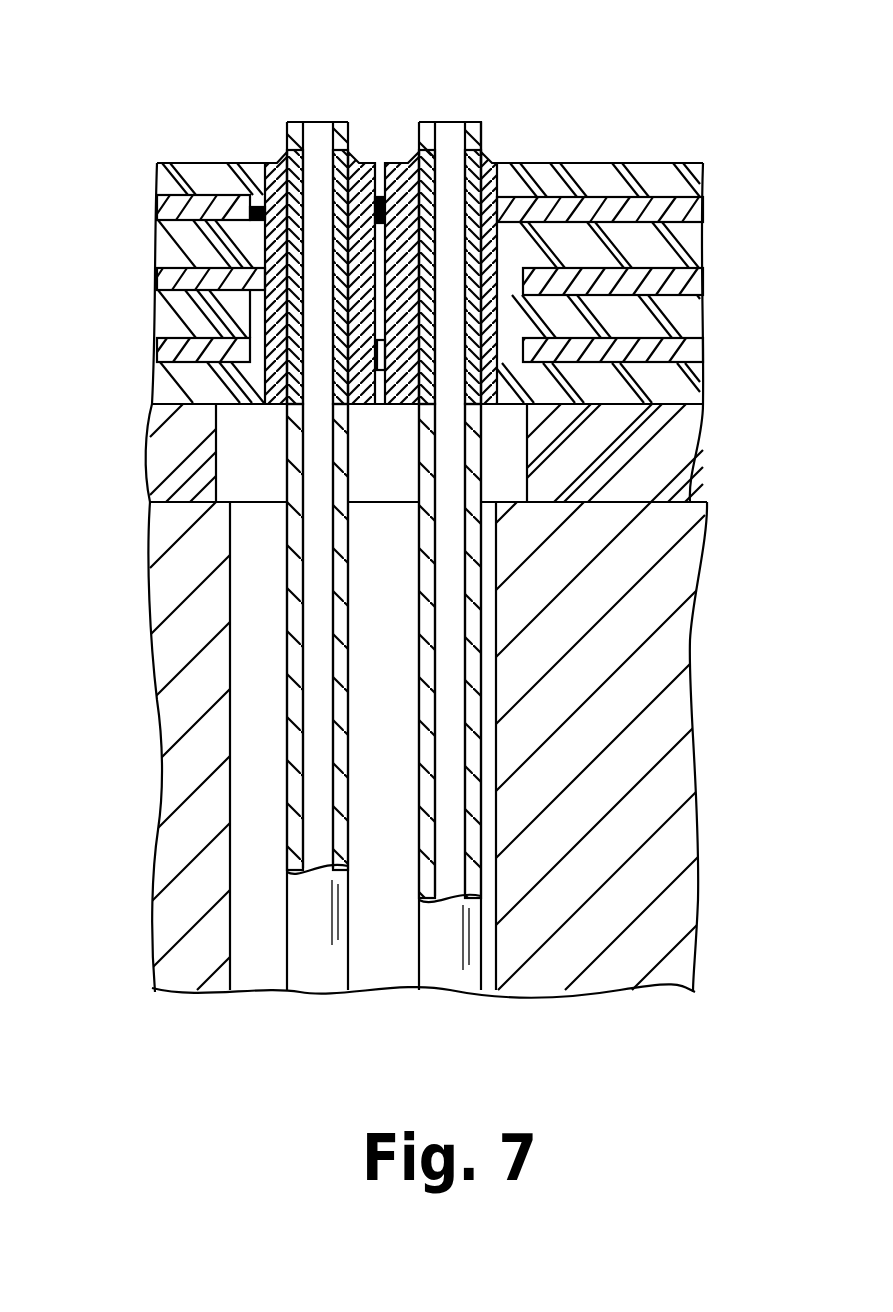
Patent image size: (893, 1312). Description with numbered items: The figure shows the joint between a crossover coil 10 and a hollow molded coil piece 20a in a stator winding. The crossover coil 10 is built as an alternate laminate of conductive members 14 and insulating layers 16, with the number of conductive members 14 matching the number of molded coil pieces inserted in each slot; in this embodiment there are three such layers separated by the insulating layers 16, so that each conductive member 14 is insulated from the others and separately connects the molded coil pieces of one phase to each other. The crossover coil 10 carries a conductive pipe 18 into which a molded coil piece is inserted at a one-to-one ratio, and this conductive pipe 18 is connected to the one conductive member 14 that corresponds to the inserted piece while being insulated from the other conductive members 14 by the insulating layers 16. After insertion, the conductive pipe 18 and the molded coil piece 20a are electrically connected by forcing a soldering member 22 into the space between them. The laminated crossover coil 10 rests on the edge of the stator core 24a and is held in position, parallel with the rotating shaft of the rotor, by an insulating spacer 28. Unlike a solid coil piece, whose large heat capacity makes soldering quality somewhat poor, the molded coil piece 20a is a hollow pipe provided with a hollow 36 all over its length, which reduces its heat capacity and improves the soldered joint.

The crossover coil 10 is at (640, 164).
The conductive member 14 is at (172, 283).
The insulating layer 16 is at (680, 253).
The conductive pipe 18 is at (268, 163).
The molded coil piece 20a is at (479, 122).
The soldering member 22 is at (497, 163).
The stator core 24a is at (185, 770).
The insulating spacer 28 is at (163, 458).
The hollow 36 is at (447, 121).